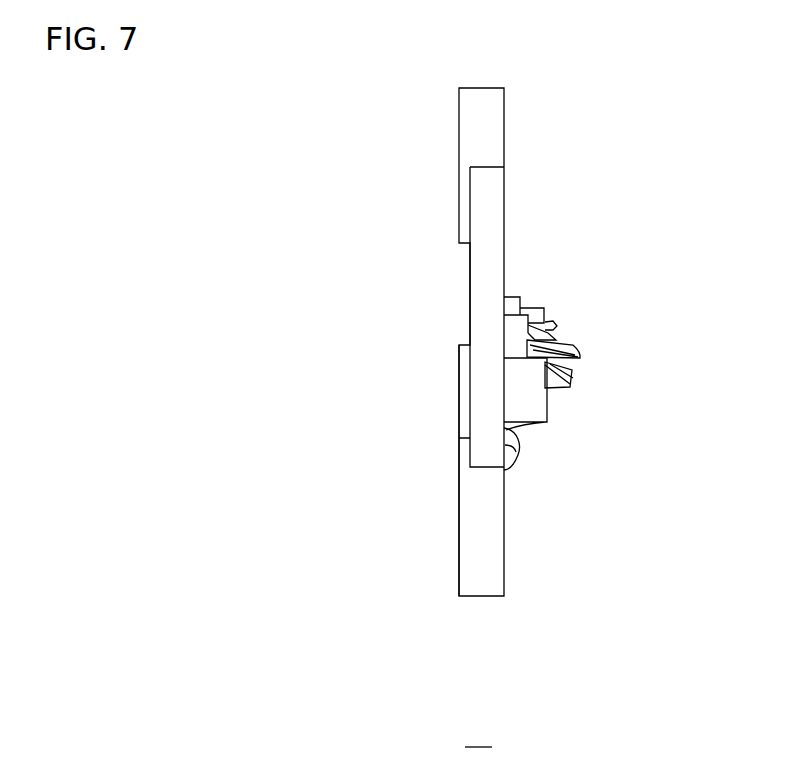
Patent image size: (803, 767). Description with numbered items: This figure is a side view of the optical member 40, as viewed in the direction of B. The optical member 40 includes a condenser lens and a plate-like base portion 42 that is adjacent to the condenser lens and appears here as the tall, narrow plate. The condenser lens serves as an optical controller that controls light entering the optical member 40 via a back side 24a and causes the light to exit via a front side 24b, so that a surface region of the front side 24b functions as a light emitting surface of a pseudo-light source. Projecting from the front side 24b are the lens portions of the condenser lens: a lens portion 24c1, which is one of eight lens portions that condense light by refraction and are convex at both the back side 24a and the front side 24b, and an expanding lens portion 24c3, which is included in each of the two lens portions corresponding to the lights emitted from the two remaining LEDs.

The optical member 40 is at (478, 734).
The base portion 42 is at (504, 267).
The back side 24a is at (457, 426).
The front side 24b is at (553, 407).
The lens portion 24c1 is at (518, 443).
The expanding lens portion 24c3 is at (575, 340).